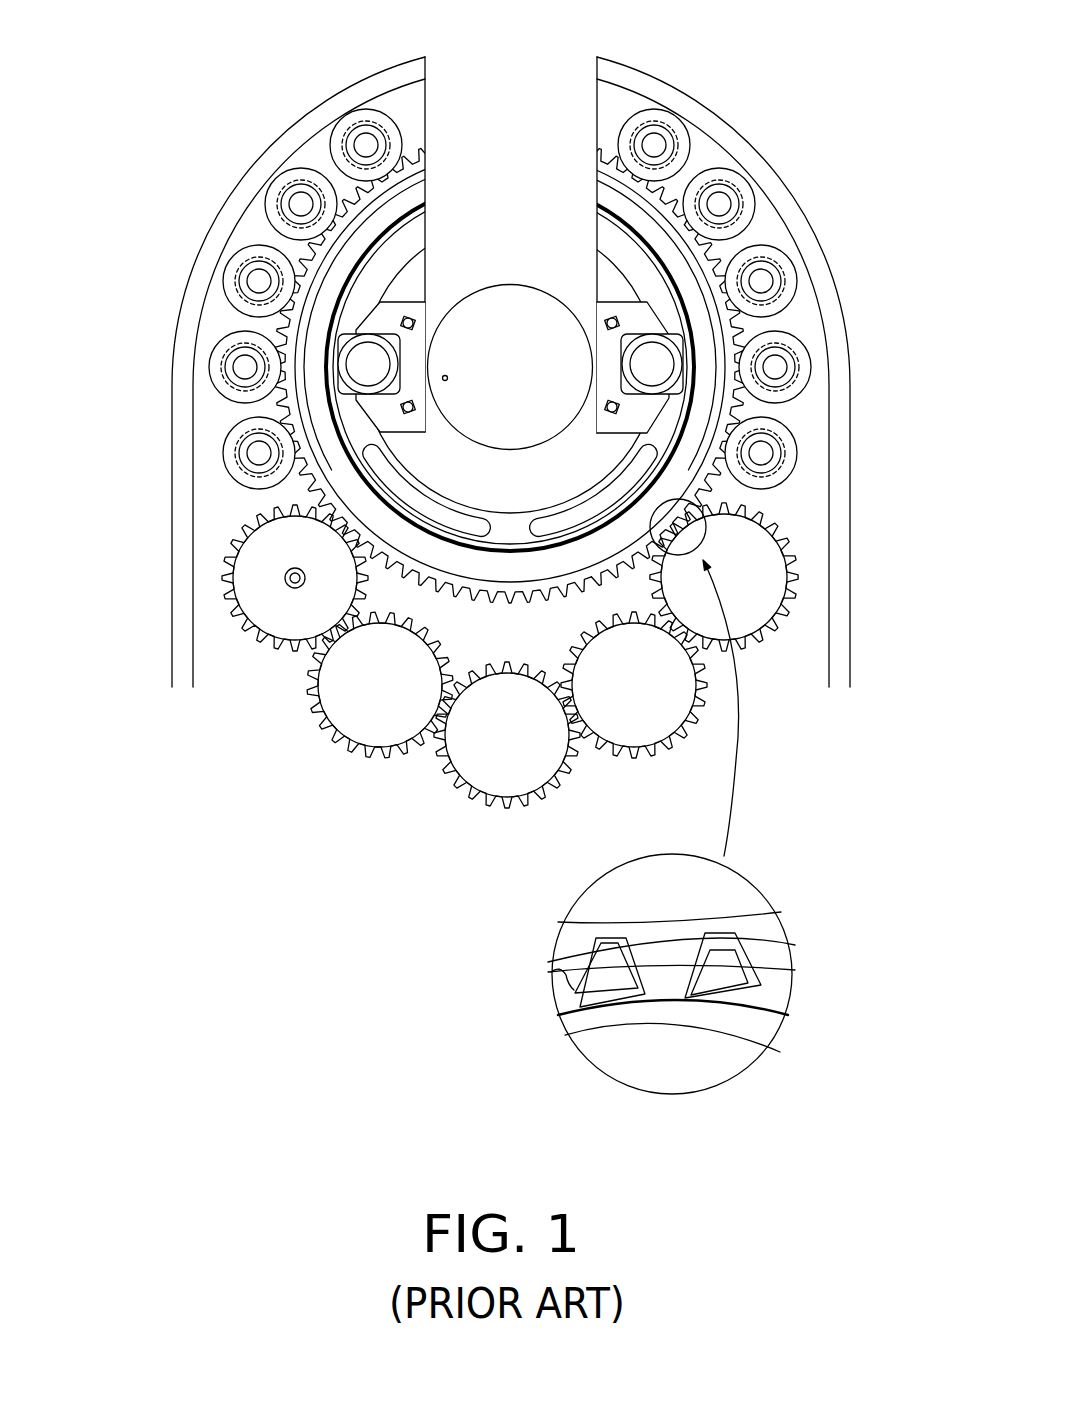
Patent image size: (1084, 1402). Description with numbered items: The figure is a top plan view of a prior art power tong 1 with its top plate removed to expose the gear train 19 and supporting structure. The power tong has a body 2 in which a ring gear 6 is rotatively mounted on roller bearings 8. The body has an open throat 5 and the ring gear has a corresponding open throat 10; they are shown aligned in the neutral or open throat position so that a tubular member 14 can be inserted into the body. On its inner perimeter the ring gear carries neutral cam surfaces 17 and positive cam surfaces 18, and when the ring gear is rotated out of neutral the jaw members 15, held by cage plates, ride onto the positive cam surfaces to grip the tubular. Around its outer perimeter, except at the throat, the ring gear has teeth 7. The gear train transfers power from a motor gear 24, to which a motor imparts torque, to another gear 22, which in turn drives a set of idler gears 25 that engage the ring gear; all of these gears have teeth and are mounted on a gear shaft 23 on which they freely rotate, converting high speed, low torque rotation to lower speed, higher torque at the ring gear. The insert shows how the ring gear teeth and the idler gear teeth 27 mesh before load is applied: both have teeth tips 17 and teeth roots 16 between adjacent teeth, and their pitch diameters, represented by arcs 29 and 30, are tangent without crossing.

The power tong 1 is at (521, 345).
The body 2 is at (783, 151).
The open throat 5 is at (481, 108).
The ring gear 6 is at (526, 500).
The teeth 7 is at (467, 601).
The roller bearings 8 is at (382, 112).
The open throat 10 is at (485, 205).
The tubular member 14 is at (577, 334).
The jaw members 15 is at (606, 303).
The teeth roots 16 is at (613, 940).
The neutral cam surfaces 17 is at (664, 352).
The positive cam surfaces 18 is at (600, 286).
The gear train 19 is at (757, 703).
The gear 22 is at (361, 718).
The gear shaft 23 is at (285, 578).
The motor gear 24 is at (518, 735).
The idler gears 25 is at (282, 628).
The idler gear teeth 27 is at (273, 642).
The arc 29 is at (762, 935).
The arc 30 is at (560, 970).